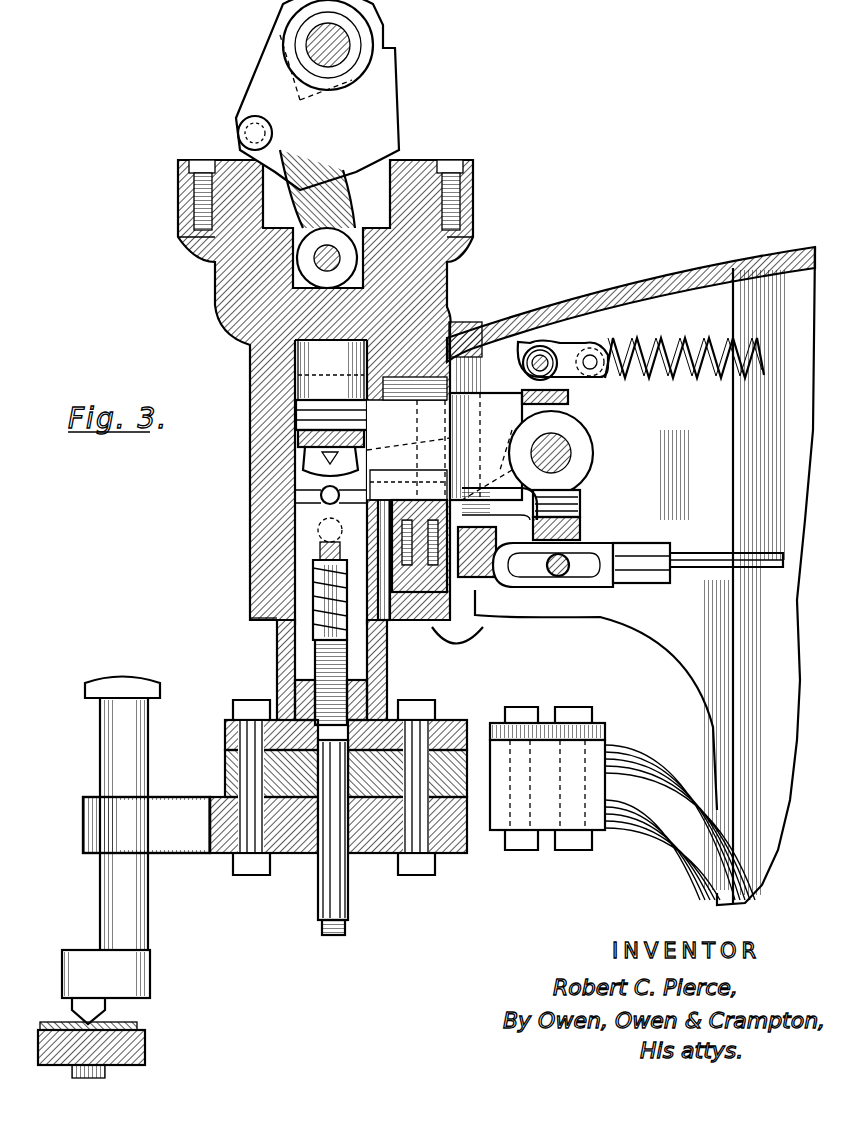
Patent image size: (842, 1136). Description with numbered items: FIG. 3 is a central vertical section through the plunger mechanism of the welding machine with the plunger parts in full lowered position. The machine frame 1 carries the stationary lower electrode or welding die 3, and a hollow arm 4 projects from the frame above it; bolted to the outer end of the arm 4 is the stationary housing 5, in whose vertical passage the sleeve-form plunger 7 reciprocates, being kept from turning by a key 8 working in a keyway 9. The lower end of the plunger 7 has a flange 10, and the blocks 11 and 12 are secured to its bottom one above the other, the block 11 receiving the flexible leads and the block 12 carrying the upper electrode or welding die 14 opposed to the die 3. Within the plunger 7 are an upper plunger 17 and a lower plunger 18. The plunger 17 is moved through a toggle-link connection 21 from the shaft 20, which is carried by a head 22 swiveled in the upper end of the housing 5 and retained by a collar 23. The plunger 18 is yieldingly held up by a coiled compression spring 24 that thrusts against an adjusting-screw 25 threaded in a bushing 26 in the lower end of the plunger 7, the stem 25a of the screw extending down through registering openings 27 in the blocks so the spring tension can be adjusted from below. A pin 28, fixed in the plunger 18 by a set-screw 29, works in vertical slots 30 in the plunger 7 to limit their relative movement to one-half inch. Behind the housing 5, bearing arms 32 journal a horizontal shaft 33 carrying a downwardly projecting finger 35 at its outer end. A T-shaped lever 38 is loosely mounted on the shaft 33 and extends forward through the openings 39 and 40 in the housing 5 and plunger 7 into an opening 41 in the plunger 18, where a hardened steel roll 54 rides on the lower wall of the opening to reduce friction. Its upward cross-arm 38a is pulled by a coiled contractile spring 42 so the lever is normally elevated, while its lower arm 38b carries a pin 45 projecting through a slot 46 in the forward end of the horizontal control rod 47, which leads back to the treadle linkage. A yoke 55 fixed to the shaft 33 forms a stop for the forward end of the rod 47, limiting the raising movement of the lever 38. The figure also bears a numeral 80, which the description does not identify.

The machine frame 1 is at (770, 718).
The lower stationary electrode or welding die 3 is at (108, 1074).
The hollow arm or projection 4 is at (598, 296).
The stationary housing or plunger carrying head 5 is at (240, 320).
The plunger 7 is at (288, 652).
The key 8 is at (385, 610).
The keyway 9 is at (410, 540).
The flange or enlargement 10 is at (445, 720).
The block 11 is at (600, 775).
The block 12 is at (182, 808).
The upper electrode or welding-die 14 is at (76, 1006).
The upper plunger 17 is at (298, 366).
The lower plunger 18 is at (320, 550).
The shaft 20 is at (350, 50).
The toggle-link connection 21 is at (238, 130).
The head 22 is at (405, 168).
The collar 23 is at (485, 172).
The coiled compression spring 24 is at (300, 608).
The adjusting-screw 25 is at (347, 690).
The stem 25a is at (348, 886).
The bushing 26 is at (305, 705).
The registering openings 27 is at (300, 855).
The pin 28 is at (318, 530).
The set-screw 29 is at (313, 575).
The vertically extending slots 30 is at (440, 472).
The bearing arms 32 is at (494, 415).
The shaft 33 is at (575, 452).
The downwardly projecting finger 35 is at (583, 503).
The lever 38 is at (422, 460).
The cross-arm 38a is at (572, 403).
The lower arm 38b is at (580, 530).
The opening 39 is at (470, 345).
The opening 40 is at (375, 418).
The opening 41 is at (303, 458).
The coiled contractile spring 42 is at (680, 345).
The pin 45 is at (568, 572).
The slot 46 is at (530, 572).
The rod 47 is at (695, 555).
The hardened steel roll 54 is at (321, 493).
The yoke 55 is at (485, 572).
The collar 80 is at (296, 413).